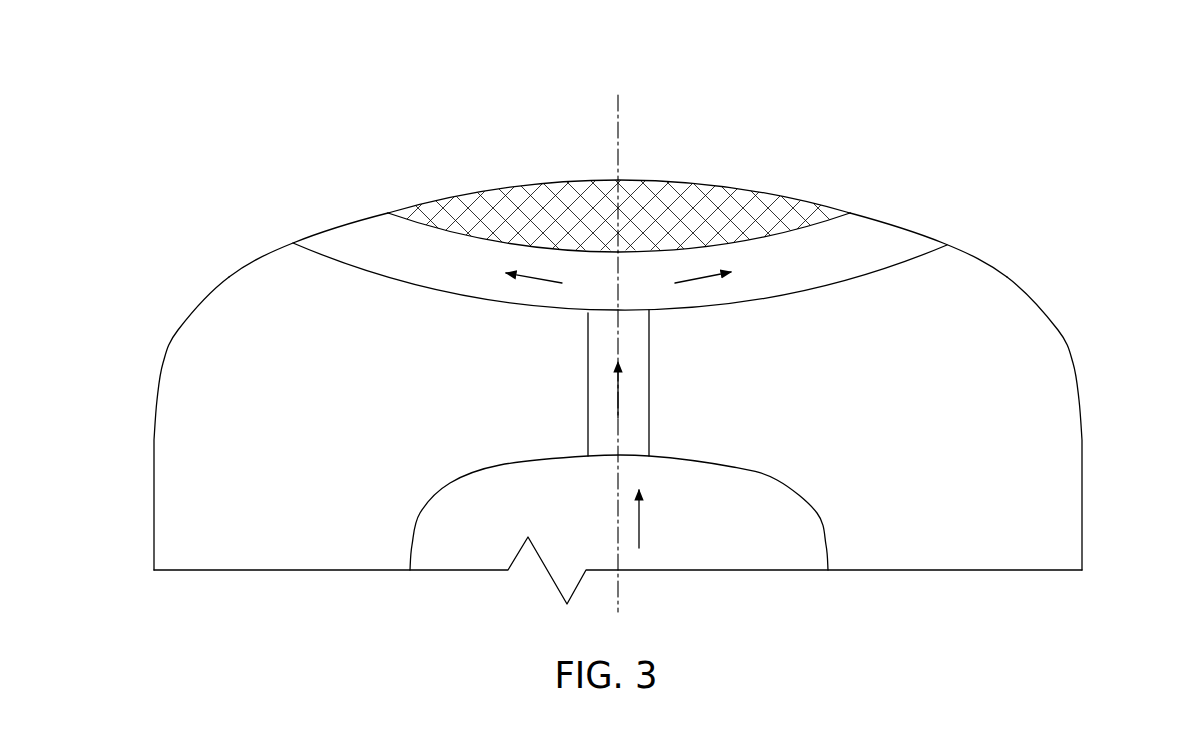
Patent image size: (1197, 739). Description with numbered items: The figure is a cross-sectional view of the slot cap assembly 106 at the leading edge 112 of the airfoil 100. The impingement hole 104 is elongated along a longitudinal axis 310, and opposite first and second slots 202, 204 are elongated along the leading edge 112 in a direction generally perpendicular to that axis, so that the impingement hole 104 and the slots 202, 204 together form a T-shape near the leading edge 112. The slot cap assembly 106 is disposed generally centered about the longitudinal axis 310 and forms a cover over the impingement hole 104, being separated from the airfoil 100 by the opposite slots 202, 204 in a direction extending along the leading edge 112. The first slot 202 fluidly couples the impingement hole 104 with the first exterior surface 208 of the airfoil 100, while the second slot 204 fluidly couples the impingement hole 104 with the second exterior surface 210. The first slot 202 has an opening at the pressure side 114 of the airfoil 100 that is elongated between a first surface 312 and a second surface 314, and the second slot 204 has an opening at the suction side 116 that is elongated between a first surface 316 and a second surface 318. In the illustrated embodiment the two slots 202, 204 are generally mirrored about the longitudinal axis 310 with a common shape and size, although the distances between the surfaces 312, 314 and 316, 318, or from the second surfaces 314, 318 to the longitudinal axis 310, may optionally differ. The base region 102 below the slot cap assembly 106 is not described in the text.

The airfoil 100 is at (1060, 106).
The base body 102 is at (758, 557).
The impingement hole 104 is at (650, 393).
The slot cap assembly 106 is at (618, 126).
The leading edge 112 is at (662, 180).
The pressure side 114 is at (162, 370).
The suction side 116 is at (1063, 337).
The first slot 202 is at (322, 212).
The second slot 204 is at (906, 214).
The first exterior surface 208 is at (228, 281).
The second exterior surface 210 is at (1007, 277).
The longitudinal axis 310 is at (616, 130).
The first surface 312 is at (293, 241).
The second surface 314 is at (385, 212).
The first surface 316 is at (947, 243).
The second surface 318 is at (851, 211).